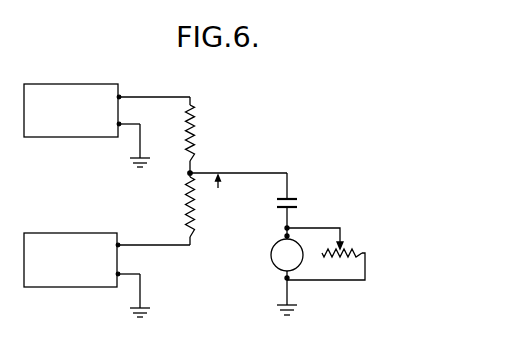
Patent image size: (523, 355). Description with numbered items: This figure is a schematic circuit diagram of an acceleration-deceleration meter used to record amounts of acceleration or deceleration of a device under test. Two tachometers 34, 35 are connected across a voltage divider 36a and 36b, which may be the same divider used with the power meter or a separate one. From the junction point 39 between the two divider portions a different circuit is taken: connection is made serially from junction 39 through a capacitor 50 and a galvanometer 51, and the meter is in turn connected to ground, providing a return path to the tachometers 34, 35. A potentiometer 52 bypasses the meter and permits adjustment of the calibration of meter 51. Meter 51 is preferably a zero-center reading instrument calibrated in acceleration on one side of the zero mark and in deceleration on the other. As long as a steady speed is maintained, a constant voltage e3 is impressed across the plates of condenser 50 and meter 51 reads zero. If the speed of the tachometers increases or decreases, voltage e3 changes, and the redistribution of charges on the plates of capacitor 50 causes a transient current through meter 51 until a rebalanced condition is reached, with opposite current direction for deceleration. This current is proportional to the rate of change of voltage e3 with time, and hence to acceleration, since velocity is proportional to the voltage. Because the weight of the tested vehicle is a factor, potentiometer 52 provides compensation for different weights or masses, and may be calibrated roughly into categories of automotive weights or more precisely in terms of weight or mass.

The tachometer 34 is at (84, 113).
The tachometer 35 is at (84, 262).
The voltage divider 36a is at (194, 141).
The voltage divider 36b is at (196, 228).
The junction point 39 is at (192, 172).
The capacitor 50 is at (292, 197).
The galvanometer 51 is at (271, 258).
The potentiometer 52 is at (362, 251).
The voltage e3 is at (219, 195).